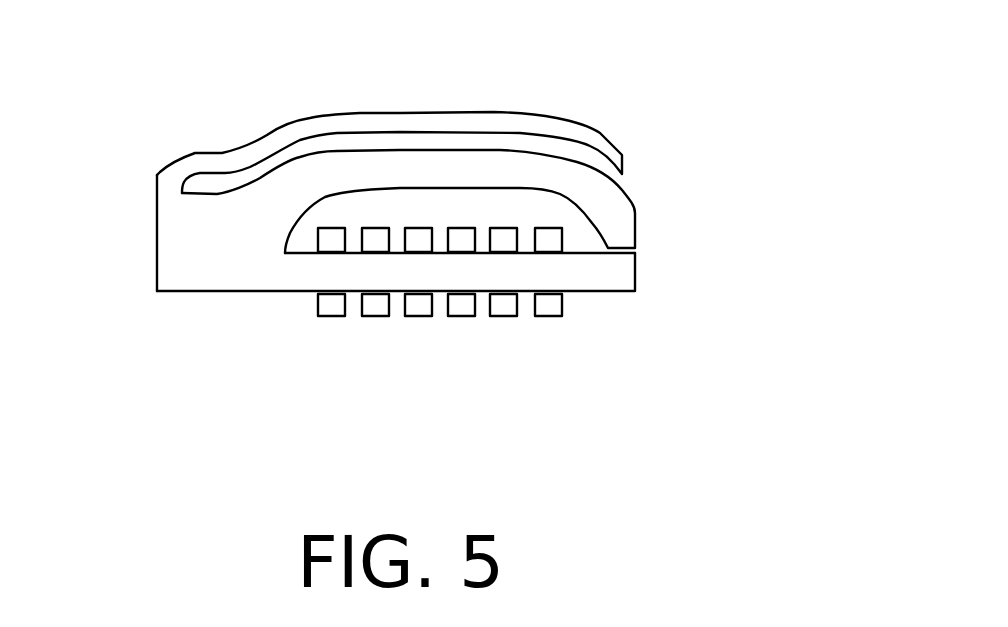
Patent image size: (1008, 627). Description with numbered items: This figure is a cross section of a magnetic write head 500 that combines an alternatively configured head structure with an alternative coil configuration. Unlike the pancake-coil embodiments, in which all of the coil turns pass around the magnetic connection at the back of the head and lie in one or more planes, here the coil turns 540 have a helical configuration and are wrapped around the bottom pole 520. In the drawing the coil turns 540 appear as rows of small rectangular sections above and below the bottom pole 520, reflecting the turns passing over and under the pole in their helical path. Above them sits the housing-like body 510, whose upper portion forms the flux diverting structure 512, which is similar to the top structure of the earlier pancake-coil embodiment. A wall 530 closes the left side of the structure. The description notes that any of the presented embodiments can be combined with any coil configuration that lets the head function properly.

The write head 500 is at (466, 264).
The housing 510 is at (637, 230).
The flux diverting structure 512 is at (398, 113).
The bottom pole 520 is at (627, 270).
The side wall 530 is at (157, 245).
The coil turns 540 is at (377, 317).